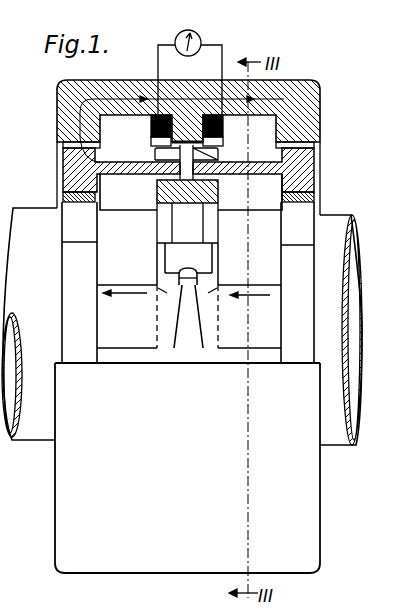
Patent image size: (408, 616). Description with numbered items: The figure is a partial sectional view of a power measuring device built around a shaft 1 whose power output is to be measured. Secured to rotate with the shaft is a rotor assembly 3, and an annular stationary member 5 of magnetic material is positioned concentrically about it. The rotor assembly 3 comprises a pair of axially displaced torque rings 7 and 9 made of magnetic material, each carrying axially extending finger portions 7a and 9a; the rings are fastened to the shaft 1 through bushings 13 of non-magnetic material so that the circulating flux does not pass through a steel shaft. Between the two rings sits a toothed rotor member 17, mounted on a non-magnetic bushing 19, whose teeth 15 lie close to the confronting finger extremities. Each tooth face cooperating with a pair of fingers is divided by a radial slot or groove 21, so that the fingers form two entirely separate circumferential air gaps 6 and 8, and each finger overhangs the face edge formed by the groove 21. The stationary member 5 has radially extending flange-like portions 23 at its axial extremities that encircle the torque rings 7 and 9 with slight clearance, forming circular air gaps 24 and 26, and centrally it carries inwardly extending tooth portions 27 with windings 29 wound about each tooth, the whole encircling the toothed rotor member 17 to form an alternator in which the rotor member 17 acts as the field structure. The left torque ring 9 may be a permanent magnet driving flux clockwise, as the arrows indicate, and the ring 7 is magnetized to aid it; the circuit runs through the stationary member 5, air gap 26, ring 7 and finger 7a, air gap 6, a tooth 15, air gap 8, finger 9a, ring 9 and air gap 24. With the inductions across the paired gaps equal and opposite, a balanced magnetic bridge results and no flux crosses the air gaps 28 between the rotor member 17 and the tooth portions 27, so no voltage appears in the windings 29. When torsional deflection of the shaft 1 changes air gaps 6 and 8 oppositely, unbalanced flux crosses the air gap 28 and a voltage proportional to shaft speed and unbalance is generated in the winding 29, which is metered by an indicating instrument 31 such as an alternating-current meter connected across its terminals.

The shaft 1 is at (354, 228).
The rotor assembly 3 is at (302, 310).
The annular stationary member 5 is at (187, 147).
The circumferential air gap 6 is at (213, 275).
The torque ring 7 is at (314, 172).
The finger portion 7a is at (250, 173).
The circumferential air gap 8 is at (157, 273).
The torque ring 9 is at (67, 173).
The finger portion 9a is at (145, 175).
The bushing 13 is at (62, 197).
The tooth 15 is at (220, 152).
The toothed rotor member 17 is at (221, 177).
The non-magnetic bushing 19 is at (162, 197).
The radial slot or groove 21 is at (203, 156).
The flange-like portion 23 is at (58, 112).
The circular air gap 24 is at (62, 145).
The circular air gap 26 is at (312, 147).
The tooth portion 27 is at (183, 120).
The air gap 28 is at (152, 145).
The winding 29 is at (152, 125).
The indicating instrument 31 is at (198, 35).